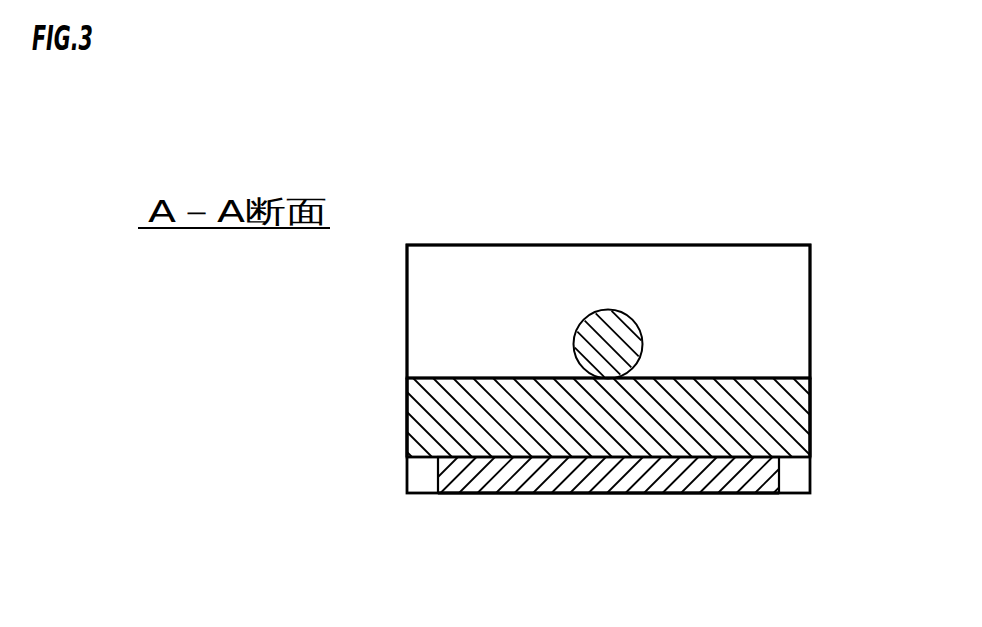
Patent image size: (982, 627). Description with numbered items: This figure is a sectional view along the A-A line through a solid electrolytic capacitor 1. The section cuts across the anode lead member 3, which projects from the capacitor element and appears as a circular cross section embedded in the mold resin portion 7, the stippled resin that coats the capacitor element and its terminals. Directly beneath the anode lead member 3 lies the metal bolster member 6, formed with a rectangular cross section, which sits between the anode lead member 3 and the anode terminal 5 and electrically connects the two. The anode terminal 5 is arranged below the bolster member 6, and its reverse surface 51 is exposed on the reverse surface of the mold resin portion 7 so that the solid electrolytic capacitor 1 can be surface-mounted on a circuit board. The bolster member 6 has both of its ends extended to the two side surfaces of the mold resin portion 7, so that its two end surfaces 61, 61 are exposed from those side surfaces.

The solid electrolytic capacitor 1 is at (703, 245).
The anode lead member 3 is at (608, 345).
The anode terminal 5 is at (677, 470).
The reverse surface of the anode terminal 51 is at (563, 493).
The bolster member 6 is at (793, 428).
The end surface of the bolster member 61 is at (407, 420).
The mold resin portion 7 is at (778, 317).